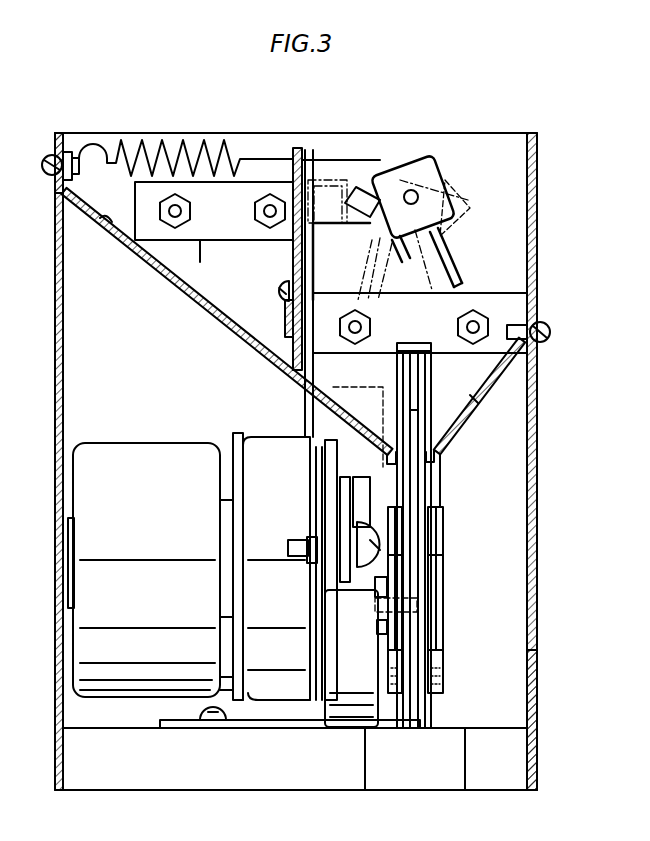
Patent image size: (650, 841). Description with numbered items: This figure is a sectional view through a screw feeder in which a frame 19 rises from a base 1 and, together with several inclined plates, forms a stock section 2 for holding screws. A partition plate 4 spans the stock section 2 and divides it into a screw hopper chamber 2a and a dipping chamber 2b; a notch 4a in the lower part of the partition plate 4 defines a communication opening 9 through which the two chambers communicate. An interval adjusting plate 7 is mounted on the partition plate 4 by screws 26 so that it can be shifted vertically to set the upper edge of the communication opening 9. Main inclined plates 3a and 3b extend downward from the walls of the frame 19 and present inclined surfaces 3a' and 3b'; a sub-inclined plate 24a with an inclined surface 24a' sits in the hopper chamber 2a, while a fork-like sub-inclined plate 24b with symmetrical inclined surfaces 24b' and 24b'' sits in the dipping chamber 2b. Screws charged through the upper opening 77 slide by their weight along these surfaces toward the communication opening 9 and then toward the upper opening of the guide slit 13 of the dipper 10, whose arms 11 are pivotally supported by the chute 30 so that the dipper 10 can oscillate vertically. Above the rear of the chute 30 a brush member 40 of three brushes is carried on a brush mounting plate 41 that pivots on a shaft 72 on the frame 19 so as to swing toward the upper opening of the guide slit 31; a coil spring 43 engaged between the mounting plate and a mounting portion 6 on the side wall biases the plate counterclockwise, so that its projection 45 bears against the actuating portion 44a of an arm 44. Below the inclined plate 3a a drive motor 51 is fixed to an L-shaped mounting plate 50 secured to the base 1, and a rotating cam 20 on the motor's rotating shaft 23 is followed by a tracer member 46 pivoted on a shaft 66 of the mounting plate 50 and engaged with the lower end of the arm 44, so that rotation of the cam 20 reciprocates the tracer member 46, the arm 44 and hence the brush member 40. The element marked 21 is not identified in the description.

The base 1 is at (142, 772).
The stock section 2 is at (516, 128).
The screw hopper chamber 2a is at (204, 140).
The dipping chamber 2b is at (476, 148).
The main inclined plate 3a is at (203, 326).
The inclined surface 3a' is at (92, 255).
The main inclined plate 3b is at (508, 400).
The inclined surface 3b' is at (498, 423).
The partition plate 4 is at (293, 170).
The notch 4a is at (384, 296).
The mounting portion 6 is at (63, 152).
The interval adjusting plate 7 is at (288, 325).
The communication opening 9 is at (290, 345).
The dipper 10 is at (425, 538).
The arms 11 is at (397, 585).
The guide slit 13 is at (416, 392).
The frame 19 is at (534, 700).
The rotating cam 20 is at (353, 705).
The opening 21 is at (413, 605).
The rotating shaft 23 is at (386, 627).
The sub-inclined plate 24a is at (205, 250).
The inclined surface 24a' is at (186, 294).
The fork-like sub-inclined plate 24b is at (431, 297).
The inclined surface 24b' is at (285, 566).
The inclined surface 24b'' is at (481, 457).
The screws 26 is at (273, 285).
The chute 30 is at (407, 713).
The guide slit 31 is at (396, 360).
The brush member 40 is at (415, 523).
The brush mounting plate 41 is at (445, 215).
The coil spring 43 is at (148, 140).
The arm 44 is at (320, 263).
The actuating portion 44a is at (338, 180).
The projection 45 is at (362, 186).
The tracer member 46 is at (318, 508).
The L-shaped mounting plate 50 is at (272, 730).
The drive motor 51 is at (80, 494).
The shaft 66 is at (295, 560).
The shaft 72 is at (413, 192).
The upper opening 77 is at (100, 124).